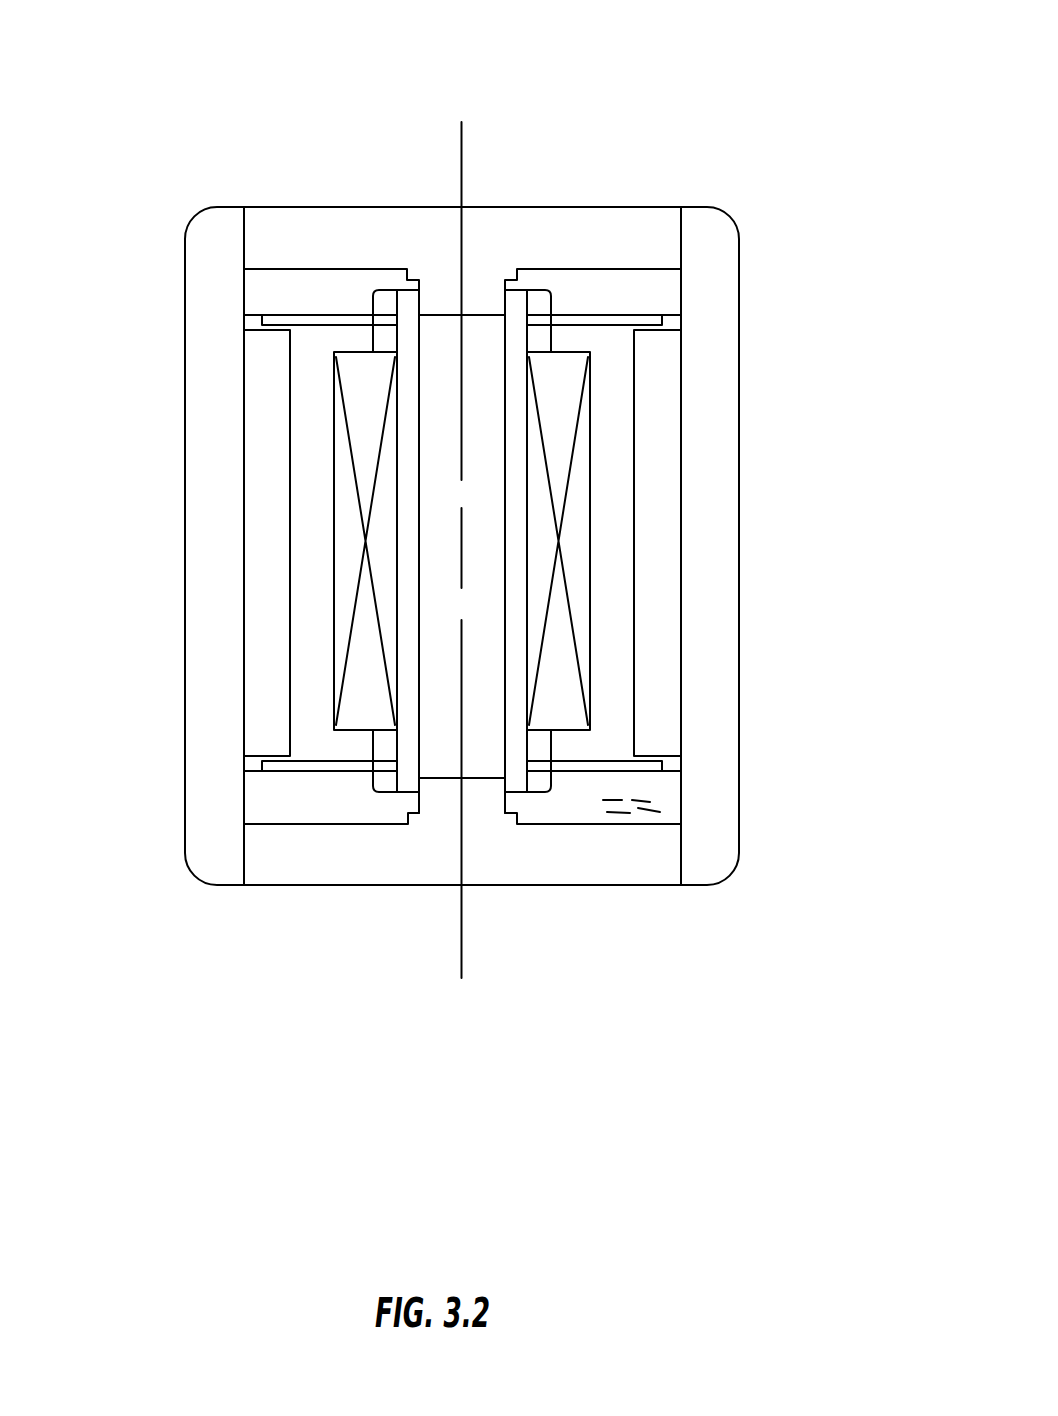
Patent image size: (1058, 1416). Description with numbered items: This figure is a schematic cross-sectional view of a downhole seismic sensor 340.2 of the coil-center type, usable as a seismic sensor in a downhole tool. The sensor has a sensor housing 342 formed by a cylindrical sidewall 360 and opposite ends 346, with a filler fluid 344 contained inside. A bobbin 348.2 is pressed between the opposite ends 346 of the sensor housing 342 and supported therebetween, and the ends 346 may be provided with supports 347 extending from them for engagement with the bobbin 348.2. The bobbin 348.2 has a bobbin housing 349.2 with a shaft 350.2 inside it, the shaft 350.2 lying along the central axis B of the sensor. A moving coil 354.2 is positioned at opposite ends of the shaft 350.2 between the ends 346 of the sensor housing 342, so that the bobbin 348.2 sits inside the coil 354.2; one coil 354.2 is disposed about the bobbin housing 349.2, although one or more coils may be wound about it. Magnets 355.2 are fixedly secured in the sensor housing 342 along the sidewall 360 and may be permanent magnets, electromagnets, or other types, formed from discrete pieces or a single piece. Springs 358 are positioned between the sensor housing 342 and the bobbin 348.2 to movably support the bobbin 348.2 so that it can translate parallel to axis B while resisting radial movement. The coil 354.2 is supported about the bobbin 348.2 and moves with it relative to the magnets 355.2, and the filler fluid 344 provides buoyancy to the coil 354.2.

The seismic sensor 340.2 is at (567, 60).
The sensor housing 342 is at (218, 207).
The filler fluid 344 is at (657, 807).
The opposite ends 346 is at (655, 220).
The supports 347 is at (445, 300).
The bobbin 348.2 is at (510, 686).
The bobbin housing 349.2 is at (515, 794).
The shaft 350.2 is at (442, 745).
The moving coil 354.2 is at (345, 513).
The magnets 355.2 is at (262, 485).
The springs 358 is at (605, 315).
The cylindrical sidewall 360 is at (203, 490).